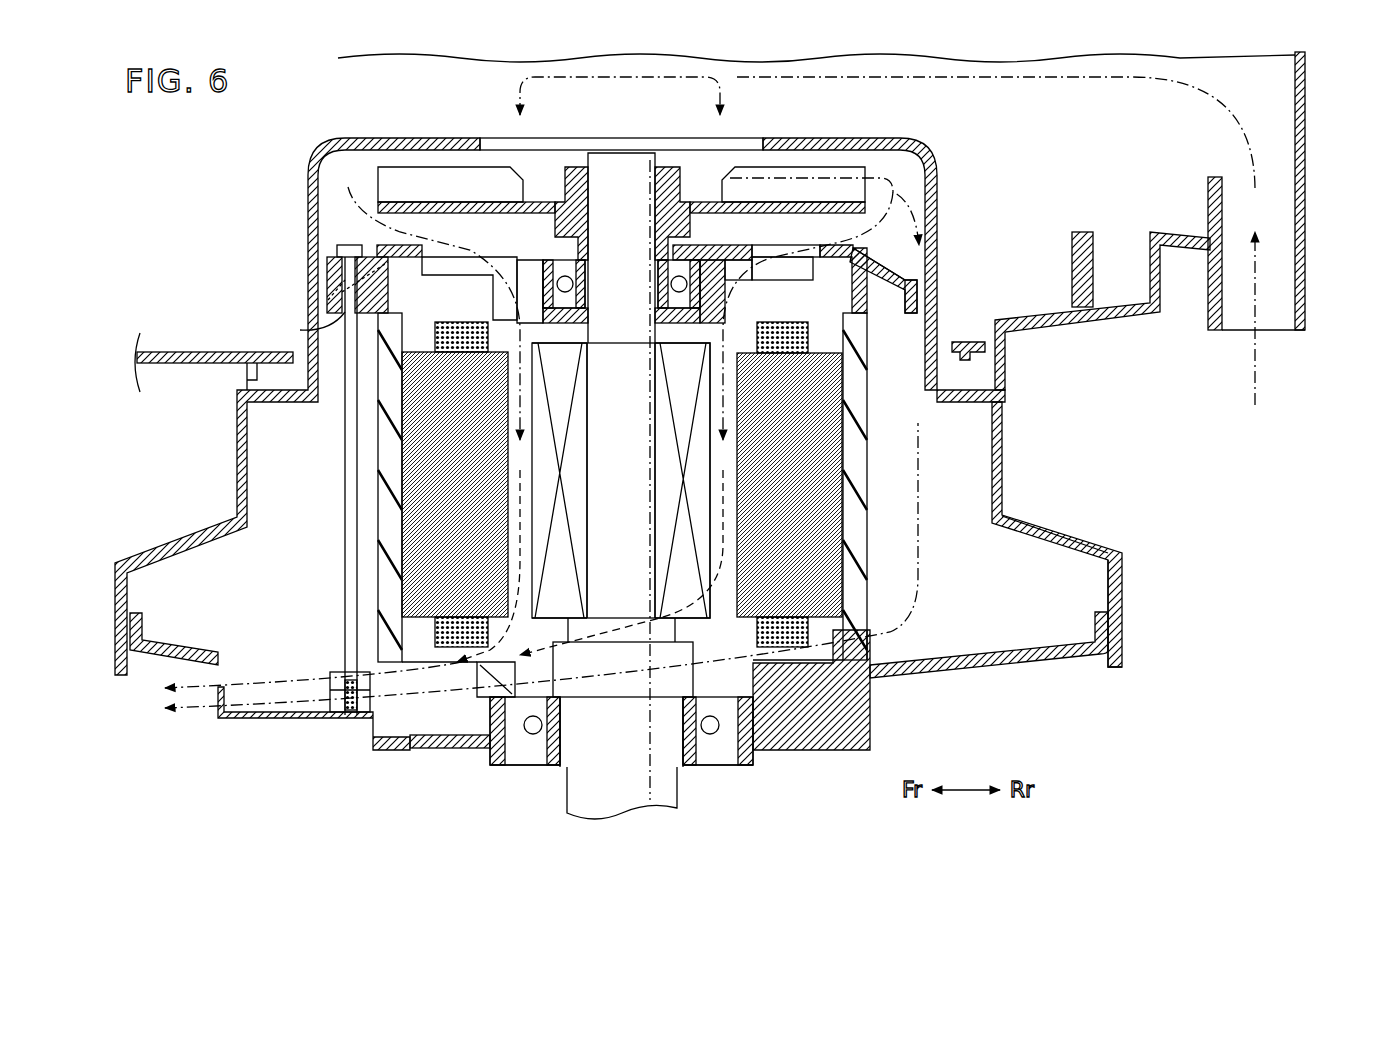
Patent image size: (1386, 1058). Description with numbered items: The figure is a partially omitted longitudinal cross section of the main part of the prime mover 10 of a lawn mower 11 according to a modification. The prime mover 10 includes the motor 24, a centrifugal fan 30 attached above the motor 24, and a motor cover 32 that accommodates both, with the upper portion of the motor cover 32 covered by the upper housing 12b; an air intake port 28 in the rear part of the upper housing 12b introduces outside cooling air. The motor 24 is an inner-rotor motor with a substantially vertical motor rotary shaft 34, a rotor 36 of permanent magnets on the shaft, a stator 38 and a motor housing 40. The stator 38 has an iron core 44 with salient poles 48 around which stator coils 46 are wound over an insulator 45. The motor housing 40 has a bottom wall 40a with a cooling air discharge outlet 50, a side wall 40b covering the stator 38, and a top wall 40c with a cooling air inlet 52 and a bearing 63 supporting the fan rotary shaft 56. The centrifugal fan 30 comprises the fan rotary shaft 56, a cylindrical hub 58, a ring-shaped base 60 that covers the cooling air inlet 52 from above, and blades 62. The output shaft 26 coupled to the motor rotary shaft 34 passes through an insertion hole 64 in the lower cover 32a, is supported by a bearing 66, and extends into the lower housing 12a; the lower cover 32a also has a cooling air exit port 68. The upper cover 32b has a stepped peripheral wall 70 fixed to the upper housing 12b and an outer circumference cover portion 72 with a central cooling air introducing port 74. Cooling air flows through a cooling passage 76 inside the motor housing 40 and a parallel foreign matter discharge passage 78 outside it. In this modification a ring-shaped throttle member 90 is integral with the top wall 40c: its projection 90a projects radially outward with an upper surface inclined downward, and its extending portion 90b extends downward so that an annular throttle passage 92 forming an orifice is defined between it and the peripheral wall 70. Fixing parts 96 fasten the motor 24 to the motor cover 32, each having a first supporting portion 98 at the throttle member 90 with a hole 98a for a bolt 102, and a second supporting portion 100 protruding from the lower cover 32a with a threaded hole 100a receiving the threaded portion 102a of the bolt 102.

The prime mover 10 is at (338, 104).
The lawn mower 11 is at (222, 137).
The lower housing 12a is at (1060, 536).
The upper housing 12b is at (1305, 216).
The motor 24 is at (846, 266).
The output shaft 26 is at (580, 785).
The air intake port 28 is at (1240, 334).
The centrifugal fan 30 is at (666, 156).
The motor cover 32 is at (898, 142).
The lower cover 32a is at (150, 660).
The upper cover 32b is at (1122, 562).
The motor rotary shaft 34 is at (640, 532).
The rotor 36 is at (690, 546).
The stator 38 is at (840, 498).
The motor housing 40 is at (858, 466).
The bottom wall 40a is at (803, 716).
The side wall 40b is at (386, 570).
The top wall 40c is at (533, 246).
The iron core 44 is at (432, 542).
The insulator 45 is at (526, 346).
The stator coils 46 is at (462, 324).
The salient poles 48 is at (506, 620).
The cooling air discharge outlet 50 is at (437, 664).
The cooling air inlet 52 is at (476, 246).
The fan rotary shaft 56 is at (622, 162).
The hub 58 is at (573, 185).
The base 60 is at (461, 205).
The blades 62 is at (420, 170).
The bearing 63 is at (578, 280).
The insertion hole 64 is at (706, 768).
The bearing 66 is at (692, 726).
The cooling air exit port 68 is at (220, 690).
The peripheral wall 70 is at (1000, 448).
The outer circumference cover portion 72 is at (832, 140).
The cooling air introducing port 74 is at (746, 146).
The cooling passage 76 is at (518, 464).
The foreign matter discharge passage 78 is at (316, 404).
The throttle member 90 is at (340, 300).
The projection 90a is at (895, 276).
The extending portion 90b is at (912, 300).
The throttle passage 92 is at (922, 308).
The fixing parts 96 is at (330, 244).
The first supporting portion 98 is at (330, 270).
The hole 98a is at (300, 330).
The second supporting portion 100 is at (335, 672).
The threaded hole 100a is at (362, 700).
The bolt 102 is at (348, 457).
The threaded portion 102a is at (348, 712).